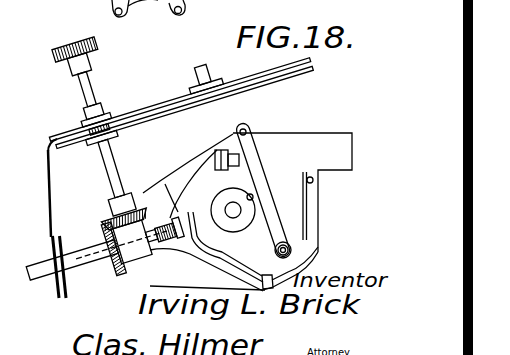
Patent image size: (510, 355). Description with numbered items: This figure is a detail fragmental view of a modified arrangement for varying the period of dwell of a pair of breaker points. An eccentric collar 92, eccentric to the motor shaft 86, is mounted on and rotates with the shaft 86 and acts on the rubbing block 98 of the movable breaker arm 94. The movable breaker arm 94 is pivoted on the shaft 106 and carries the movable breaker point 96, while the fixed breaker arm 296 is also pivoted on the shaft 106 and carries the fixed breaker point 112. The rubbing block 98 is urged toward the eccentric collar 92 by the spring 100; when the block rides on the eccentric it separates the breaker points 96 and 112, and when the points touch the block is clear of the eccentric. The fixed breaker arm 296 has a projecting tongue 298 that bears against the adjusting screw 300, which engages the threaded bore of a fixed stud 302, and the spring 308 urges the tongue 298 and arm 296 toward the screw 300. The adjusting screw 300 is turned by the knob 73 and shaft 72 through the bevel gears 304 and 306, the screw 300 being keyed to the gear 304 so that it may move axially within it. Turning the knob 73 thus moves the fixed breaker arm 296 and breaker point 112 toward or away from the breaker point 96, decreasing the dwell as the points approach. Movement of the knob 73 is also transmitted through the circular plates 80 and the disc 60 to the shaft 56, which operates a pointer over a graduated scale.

The shaft 56 is at (194, 70).
The disc 60 is at (312, 72).
The shaft 72 is at (87, 87).
The knob 73 is at (54, 58).
The circular plates 80 is at (113, 118).
The motor shaft 86 is at (242, 208).
The eccentric collar 92 is at (212, 207).
The movable breaker arm 94 is at (256, 177).
The movable breaker point 96 is at (250, 137).
The rubbing block 98 is at (252, 196).
The spring 100 is at (307, 197).
The shaft 106 is at (276, 249).
The fixed breaker point 112 is at (223, 150).
The fixed breaker arm 296 is at (200, 262).
The tongue 298 is at (170, 190).
The adjusting screw 300 is at (42, 272).
The fixed stud 302 is at (100, 235).
The bevel gear 304 is at (56, 298).
The bevel gear 306 is at (109, 208).
The spring 308 is at (319, 258).